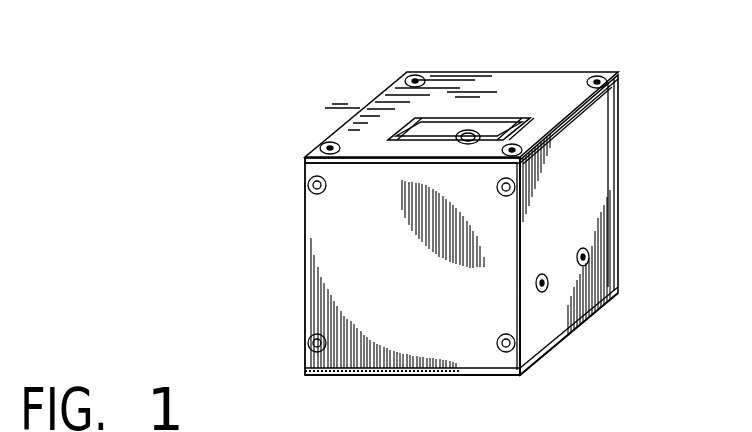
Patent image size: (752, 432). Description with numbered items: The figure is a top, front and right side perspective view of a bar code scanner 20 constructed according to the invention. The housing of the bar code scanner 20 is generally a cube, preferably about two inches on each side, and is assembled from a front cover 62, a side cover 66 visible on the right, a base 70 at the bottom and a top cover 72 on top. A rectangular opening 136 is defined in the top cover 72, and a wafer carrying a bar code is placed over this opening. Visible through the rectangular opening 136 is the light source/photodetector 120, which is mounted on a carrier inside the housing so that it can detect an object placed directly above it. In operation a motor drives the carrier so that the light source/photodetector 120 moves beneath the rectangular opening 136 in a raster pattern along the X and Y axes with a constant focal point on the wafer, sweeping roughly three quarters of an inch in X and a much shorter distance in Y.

The bar code scanner 20 is at (148, 287).
The front cover 62 is at (330, 218).
The side cover 66 is at (590, 170).
The base 70 is at (490, 377).
The top cover 72 is at (452, 97).
The light source/photodetector 120 is at (470, 131).
The rectangular opening 136 is at (415, 126).